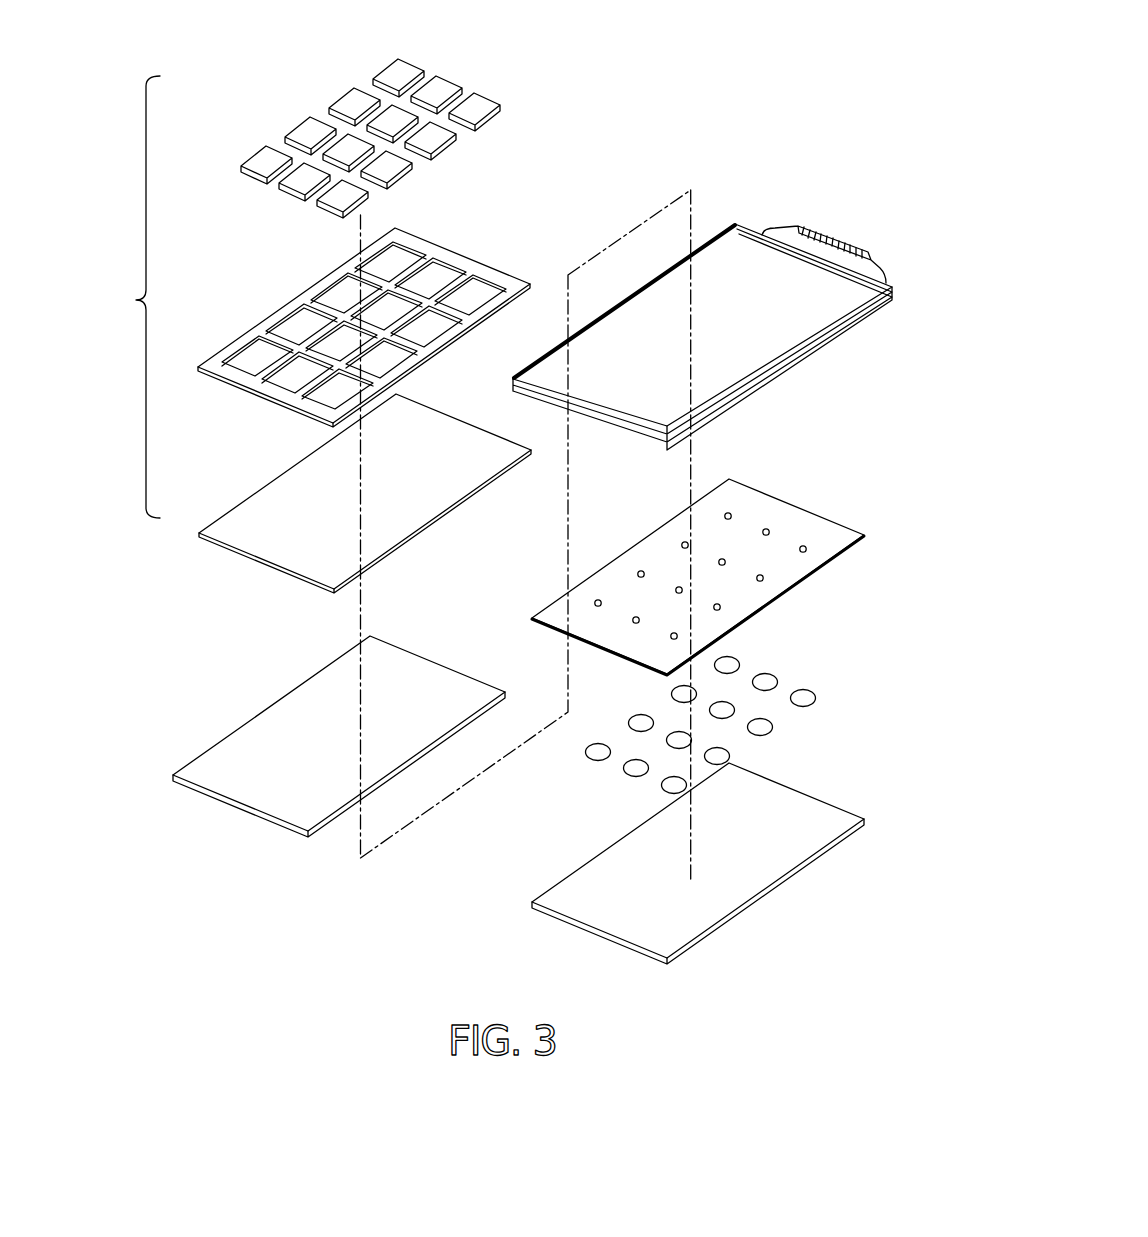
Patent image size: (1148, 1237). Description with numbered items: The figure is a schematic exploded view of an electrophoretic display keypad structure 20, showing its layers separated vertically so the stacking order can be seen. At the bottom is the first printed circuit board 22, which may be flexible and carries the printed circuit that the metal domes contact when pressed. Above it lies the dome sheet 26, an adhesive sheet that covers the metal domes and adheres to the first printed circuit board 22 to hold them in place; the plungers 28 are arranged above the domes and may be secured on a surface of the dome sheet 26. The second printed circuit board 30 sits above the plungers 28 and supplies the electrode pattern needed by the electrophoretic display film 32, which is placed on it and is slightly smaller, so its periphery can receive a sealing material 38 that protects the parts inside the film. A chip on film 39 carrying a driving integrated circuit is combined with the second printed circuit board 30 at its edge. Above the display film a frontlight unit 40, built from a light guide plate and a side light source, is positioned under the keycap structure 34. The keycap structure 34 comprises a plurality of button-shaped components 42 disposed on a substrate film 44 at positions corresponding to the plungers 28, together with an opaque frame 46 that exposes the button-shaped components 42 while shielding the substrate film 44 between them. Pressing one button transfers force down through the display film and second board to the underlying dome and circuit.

The electrophoretic display keypad structure 20 is at (766, 89).
The first printed circuit board 22 is at (807, 810).
The dome sheet 26 is at (835, 535).
The plungers 28 is at (767, 532).
The second printed circuit board 30 is at (756, 228).
The electrophoretic display film 32 is at (730, 350).
The keycap structure 34 is at (136, 300).
The sealing material 38 is at (840, 312).
The chip on film 39 is at (798, 228).
The frontlight unit 40 is at (210, 765).
The button-shaped components 42 is at (264, 160).
The substrate film 44 is at (228, 523).
The opaque frame 46 is at (216, 360).